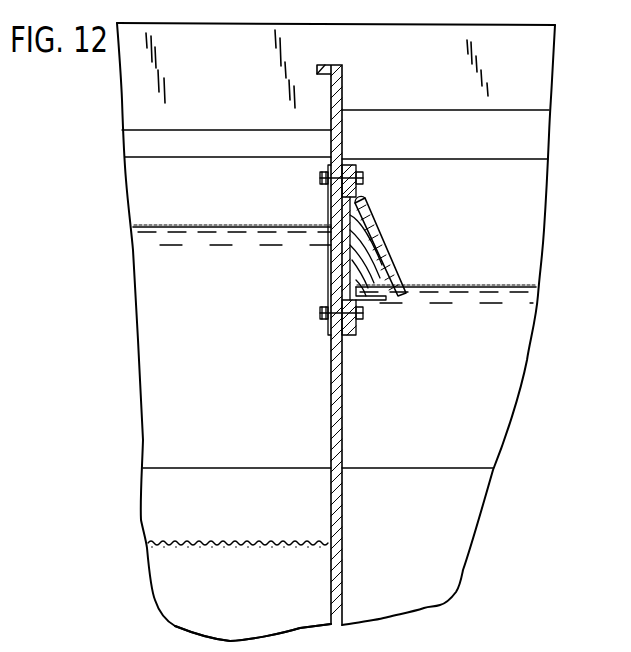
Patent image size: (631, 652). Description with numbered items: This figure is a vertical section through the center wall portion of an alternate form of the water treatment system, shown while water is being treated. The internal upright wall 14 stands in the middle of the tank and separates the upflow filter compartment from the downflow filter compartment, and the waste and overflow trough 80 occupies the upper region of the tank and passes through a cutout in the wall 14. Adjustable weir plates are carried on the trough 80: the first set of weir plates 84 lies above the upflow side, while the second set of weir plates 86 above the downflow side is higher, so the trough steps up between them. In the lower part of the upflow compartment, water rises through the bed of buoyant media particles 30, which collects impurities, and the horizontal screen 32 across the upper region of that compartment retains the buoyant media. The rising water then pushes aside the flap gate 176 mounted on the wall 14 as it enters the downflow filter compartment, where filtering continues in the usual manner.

The upright wall 14 is at (342, 400).
The bed of buoyant media particles 30 is at (259, 623).
The screen 32 is at (244, 543).
The waste and overflow trough 80 is at (494, 452).
The first set of weir plates 84 is at (208, 130).
The second set of weir plates 86 is at (425, 110).
The flap gate 176 is at (400, 249).